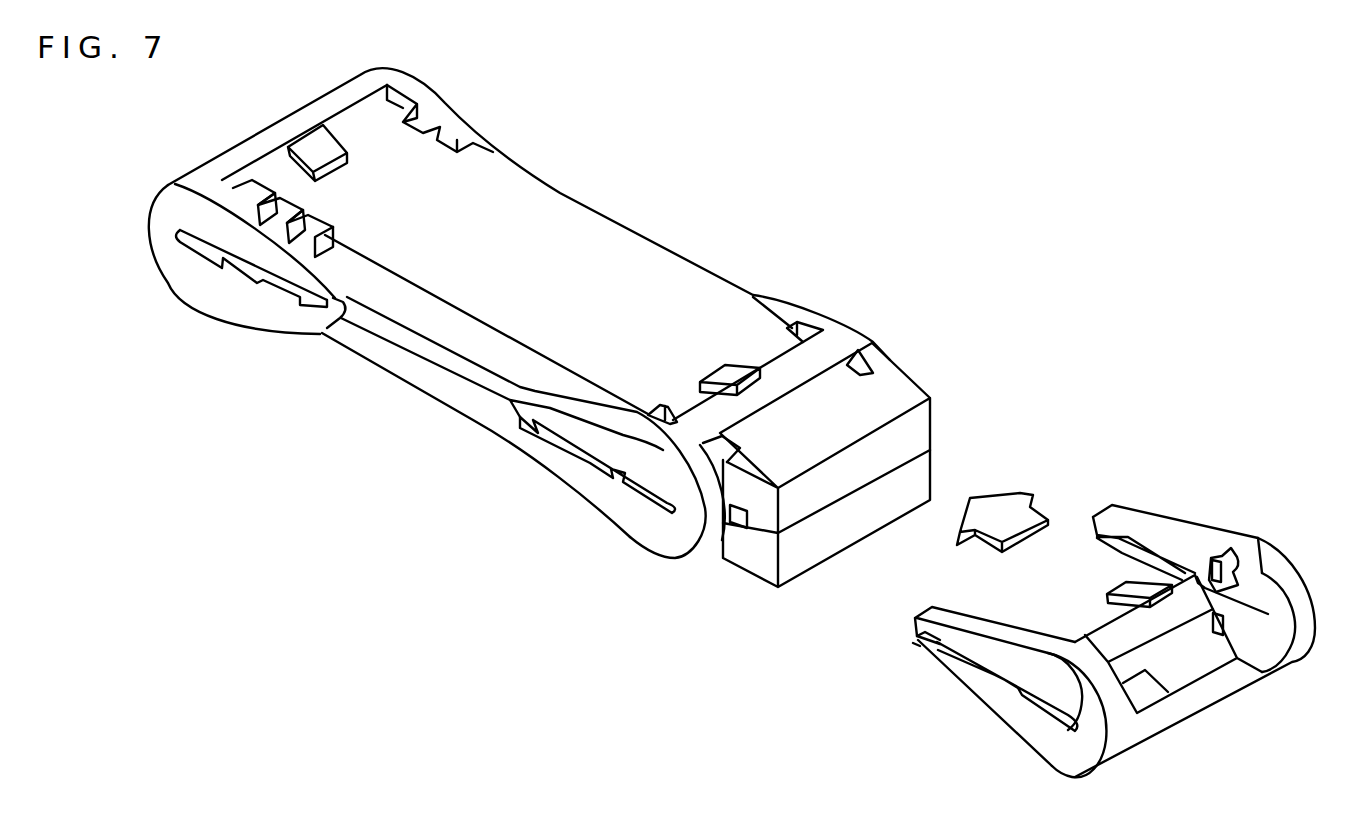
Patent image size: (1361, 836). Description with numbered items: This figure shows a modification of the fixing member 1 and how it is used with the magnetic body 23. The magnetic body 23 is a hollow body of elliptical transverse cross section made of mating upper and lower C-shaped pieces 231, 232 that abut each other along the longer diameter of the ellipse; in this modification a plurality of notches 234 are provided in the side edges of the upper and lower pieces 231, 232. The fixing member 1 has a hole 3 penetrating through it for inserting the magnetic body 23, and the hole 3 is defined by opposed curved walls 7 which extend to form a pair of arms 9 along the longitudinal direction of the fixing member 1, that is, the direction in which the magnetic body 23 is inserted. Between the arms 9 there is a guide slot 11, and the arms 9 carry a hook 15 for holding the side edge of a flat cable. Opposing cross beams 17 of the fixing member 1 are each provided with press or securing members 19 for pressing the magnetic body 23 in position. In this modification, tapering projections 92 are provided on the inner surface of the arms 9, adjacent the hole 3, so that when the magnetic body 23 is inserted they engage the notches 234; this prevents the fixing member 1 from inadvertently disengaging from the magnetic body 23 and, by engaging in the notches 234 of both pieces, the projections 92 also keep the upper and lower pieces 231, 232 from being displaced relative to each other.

The magnetic body 23 is at (447, 383).
The notches 234 is at (455, 123).
The upper C-shaped piece 231 is at (915, 420).
The lower C-shaped piece 232 is at (798, 568).
The fixing member 1 is at (1100, 630).
The hole 3 is at (1008, 692).
The curved walls 7 is at (1300, 628).
The arms 9 is at (1187, 553).
The guide slot 11 is at (972, 663).
The hook 15 is at (918, 650).
The cross beams 17 is at (1235, 677).
The securing members 19 is at (1113, 590).
The tapering projections 92 is at (1227, 622).